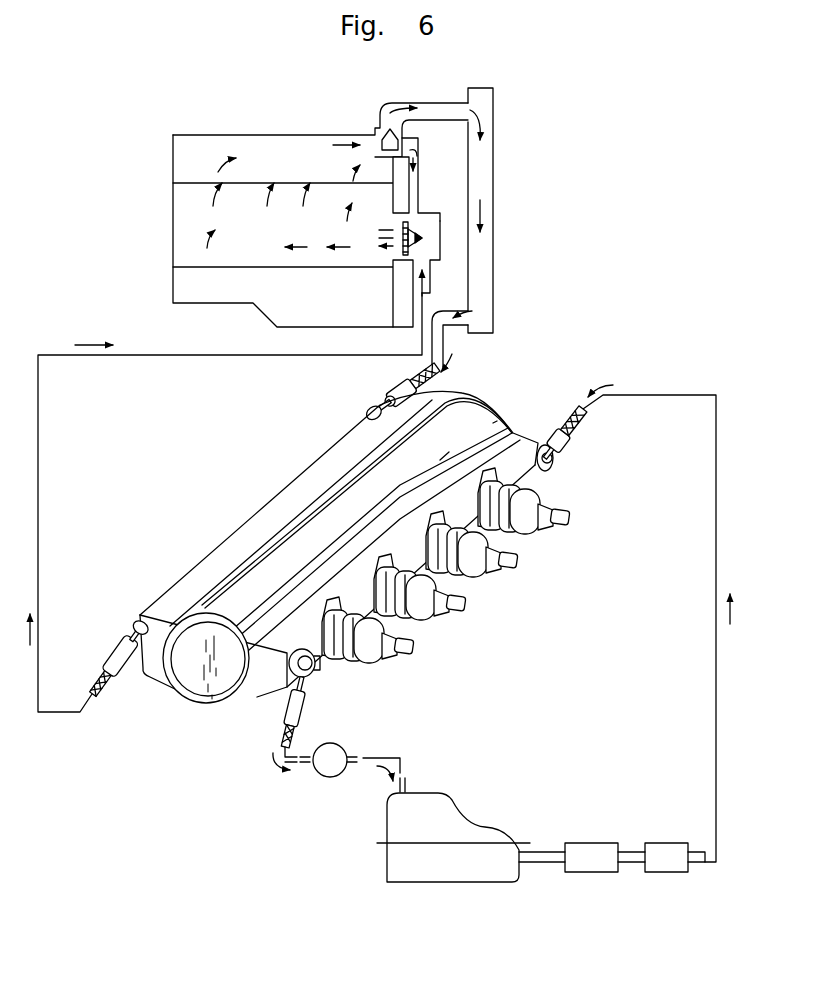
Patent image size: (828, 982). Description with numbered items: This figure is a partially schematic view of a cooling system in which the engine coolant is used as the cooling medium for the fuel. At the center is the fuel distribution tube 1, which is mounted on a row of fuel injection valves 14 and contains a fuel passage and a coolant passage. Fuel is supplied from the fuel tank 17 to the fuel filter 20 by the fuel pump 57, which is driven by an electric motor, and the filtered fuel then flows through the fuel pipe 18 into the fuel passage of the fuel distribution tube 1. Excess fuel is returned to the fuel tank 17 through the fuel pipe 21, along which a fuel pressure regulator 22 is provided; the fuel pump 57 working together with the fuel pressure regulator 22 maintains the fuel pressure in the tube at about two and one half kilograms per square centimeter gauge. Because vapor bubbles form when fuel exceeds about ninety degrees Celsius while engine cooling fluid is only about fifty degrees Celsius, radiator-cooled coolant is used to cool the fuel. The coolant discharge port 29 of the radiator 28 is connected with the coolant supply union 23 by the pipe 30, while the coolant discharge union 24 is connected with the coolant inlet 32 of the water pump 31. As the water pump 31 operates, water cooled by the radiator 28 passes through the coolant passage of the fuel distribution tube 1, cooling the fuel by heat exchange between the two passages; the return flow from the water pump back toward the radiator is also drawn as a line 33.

The fuel distribution tube 1 is at (497, 401).
The fuel injection valves 14 is at (372, 658).
The fuel tank 17 is at (465, 866).
The fuel pipe 18 is at (717, 715).
The fuel filter 20 is at (668, 864).
The fuel pipe 21 is at (383, 757).
The fuel pressure regulator 22 is at (333, 768).
The coolant supply union 23 is at (390, 403).
The coolant discharge union 24 is at (133, 641).
The radiator 28 is at (487, 160).
The coolant discharge port 29 is at (458, 311).
The pipe 30 is at (447, 346).
The water pump 31 is at (430, 237).
The coolant inlet 32 is at (414, 284).
The return line 33 is at (221, 358).
The fuel pump 57 is at (593, 864).